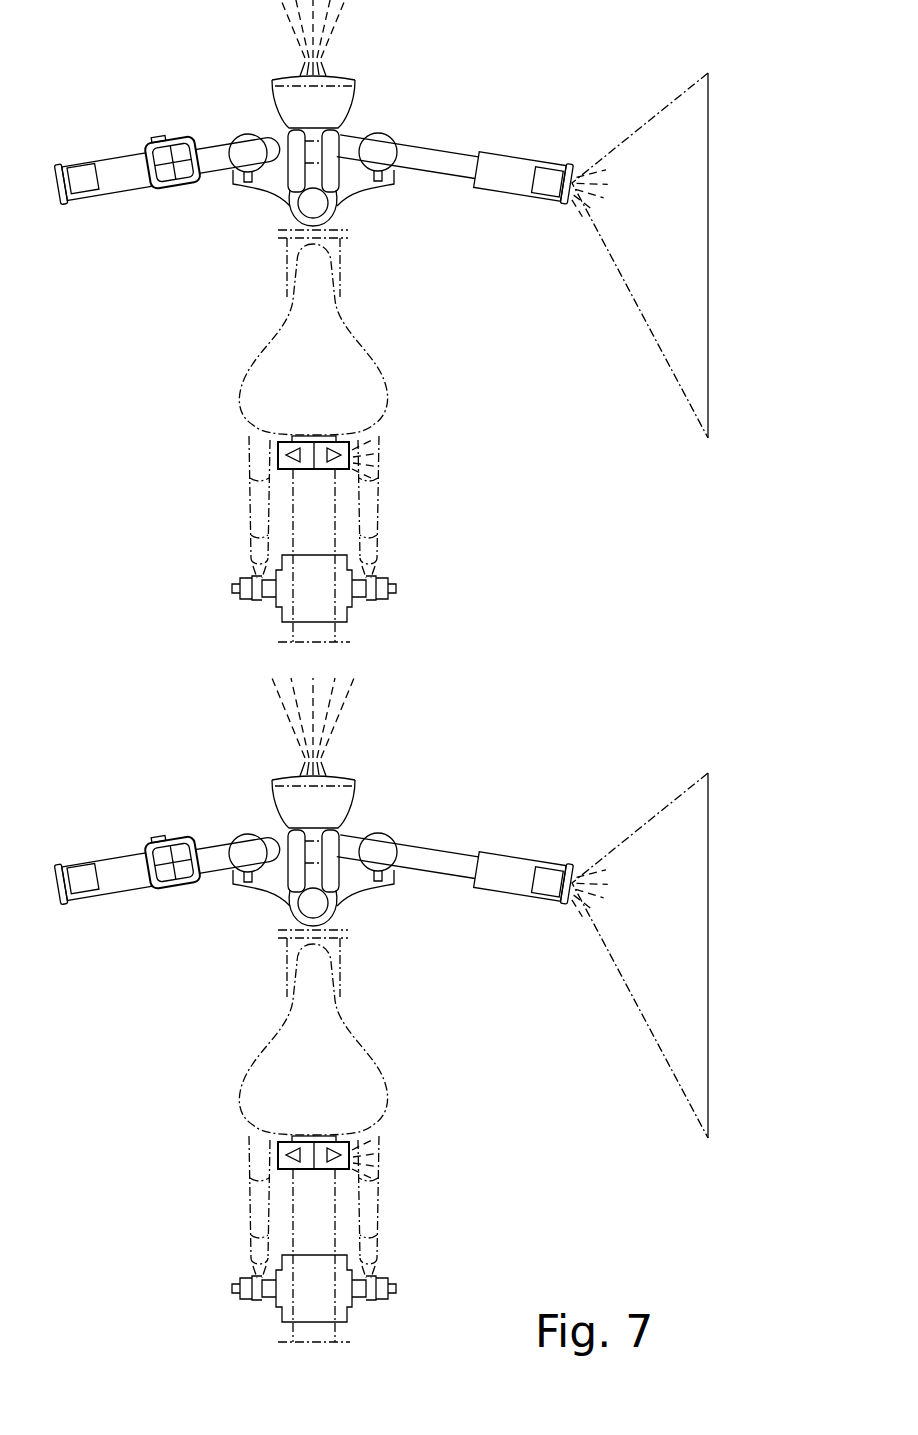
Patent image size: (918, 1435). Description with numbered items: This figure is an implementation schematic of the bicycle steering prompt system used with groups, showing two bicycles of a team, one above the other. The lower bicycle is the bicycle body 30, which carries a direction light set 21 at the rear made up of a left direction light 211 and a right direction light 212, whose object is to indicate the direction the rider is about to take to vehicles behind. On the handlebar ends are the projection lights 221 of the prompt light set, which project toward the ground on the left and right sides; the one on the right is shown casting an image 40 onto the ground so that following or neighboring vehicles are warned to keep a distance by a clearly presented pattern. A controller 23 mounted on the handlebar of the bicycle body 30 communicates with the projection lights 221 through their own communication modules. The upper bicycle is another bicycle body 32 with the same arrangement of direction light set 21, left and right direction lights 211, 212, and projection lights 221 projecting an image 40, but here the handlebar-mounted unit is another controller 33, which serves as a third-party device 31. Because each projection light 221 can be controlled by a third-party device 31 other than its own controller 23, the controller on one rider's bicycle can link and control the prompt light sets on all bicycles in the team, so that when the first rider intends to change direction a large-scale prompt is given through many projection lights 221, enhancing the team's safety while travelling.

The direction light set 21 is at (278, 452).
The left direction light 211 is at (303, 470).
The right direction light 212 is at (325, 470).
The projection light 221 is at (78, 167).
The controller 23 is at (173, 888).
The bicycle body 30 is at (418, 847).
The third-party device 31 is at (173, 188).
The another bicycle body 32 is at (418, 147).
The another controller 33 is at (182, 206).
The image 40 is at (708, 243).